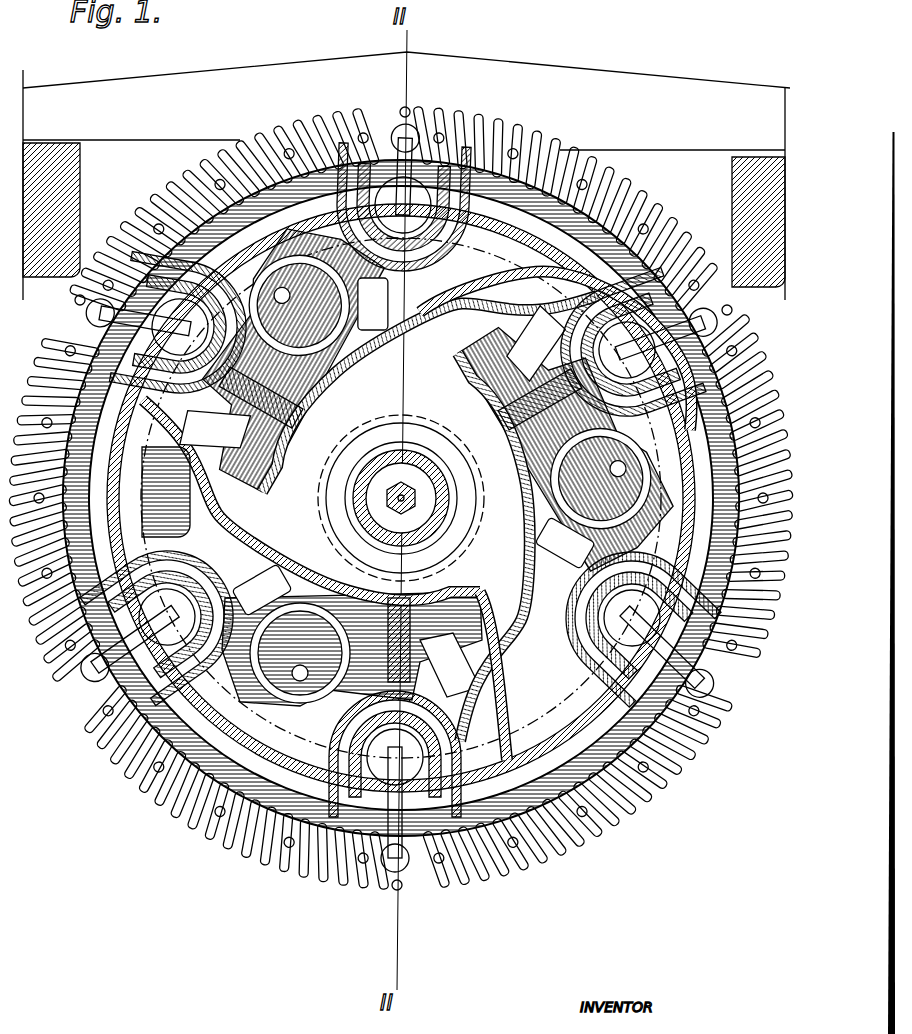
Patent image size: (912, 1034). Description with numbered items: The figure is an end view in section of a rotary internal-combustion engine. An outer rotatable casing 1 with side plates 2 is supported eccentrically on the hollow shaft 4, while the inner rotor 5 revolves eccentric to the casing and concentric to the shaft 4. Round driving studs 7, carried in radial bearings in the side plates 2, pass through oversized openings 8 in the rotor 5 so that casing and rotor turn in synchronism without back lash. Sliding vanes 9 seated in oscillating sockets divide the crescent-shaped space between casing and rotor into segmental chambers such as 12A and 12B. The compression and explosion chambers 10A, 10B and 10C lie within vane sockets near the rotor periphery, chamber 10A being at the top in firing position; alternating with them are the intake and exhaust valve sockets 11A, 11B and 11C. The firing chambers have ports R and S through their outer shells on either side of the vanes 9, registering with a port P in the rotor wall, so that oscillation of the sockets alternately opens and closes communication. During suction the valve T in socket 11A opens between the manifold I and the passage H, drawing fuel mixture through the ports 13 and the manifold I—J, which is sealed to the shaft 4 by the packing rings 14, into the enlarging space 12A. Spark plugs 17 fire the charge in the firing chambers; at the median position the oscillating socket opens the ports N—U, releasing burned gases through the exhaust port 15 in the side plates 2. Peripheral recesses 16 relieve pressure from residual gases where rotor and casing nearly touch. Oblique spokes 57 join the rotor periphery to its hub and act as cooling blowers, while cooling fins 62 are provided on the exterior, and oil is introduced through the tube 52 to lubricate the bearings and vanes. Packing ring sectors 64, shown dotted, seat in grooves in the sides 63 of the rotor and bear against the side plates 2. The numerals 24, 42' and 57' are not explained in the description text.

The rotatable casing 1 is at (400, 521).
The side plates 2 is at (305, 866).
The hollow shaft 4 is at (335, 515).
The rotor 5 is at (690, 778).
The driving studs 7 is at (270, 728).
The openings 8 is at (322, 600).
The vanes 9 is at (410, 140).
The compression and explosion chamber 10A is at (330, 128).
The compression and explosion chamber 10B is at (85, 676).
The compression and explosion chamber 10C is at (716, 690).
The intake and exhaust valve socket 11A is at (72, 326).
The intake and exhaust valve socket 11B is at (470, 860).
The intake and exhaust valve socket 11C is at (722, 322).
The segmental chamber 12A is at (108, 255).
The segmental chamber 12B is at (75, 640).
The ports 13 is at (360, 435).
The packing rings 14 is at (350, 490).
The exhaust port 15 is at (430, 700).
The peripheral recesses 16 is at (583, 160).
The spark plugs 17 is at (386, 104).
The hub 24 is at (401, 498).
The frame 42' is at (406, 173).
The oil tube 52 is at (398, 540).
The spokes 57 is at (375, 517).
The slide block 57' is at (360, 487).
The cooling fins 62 is at (135, 800).
The sides of the rotor 63 is at (509, 363).
The packing ring sectors 64 is at (660, 805).
The port P is at (506, 126).
The passage H is at (60, 348).
The port N is at (425, 527).
The valve T is at (435, 493).
The manifold I is at (343, 504).
The manifold J is at (503, 581).
The port R is at (409, 418).
The port S is at (385, 422).
The port U is at (400, 331).